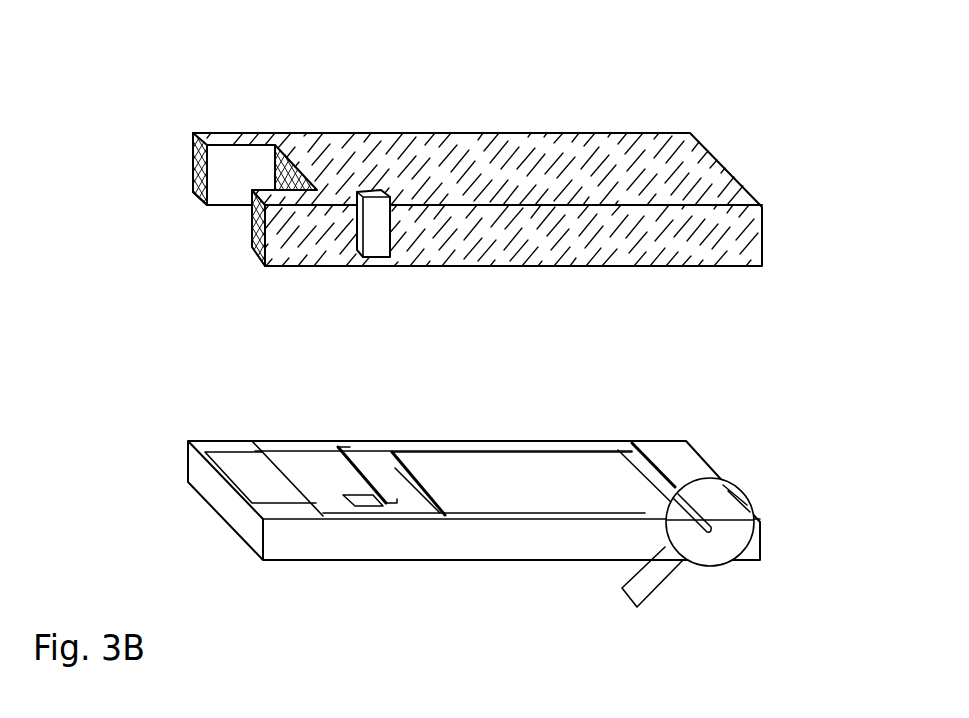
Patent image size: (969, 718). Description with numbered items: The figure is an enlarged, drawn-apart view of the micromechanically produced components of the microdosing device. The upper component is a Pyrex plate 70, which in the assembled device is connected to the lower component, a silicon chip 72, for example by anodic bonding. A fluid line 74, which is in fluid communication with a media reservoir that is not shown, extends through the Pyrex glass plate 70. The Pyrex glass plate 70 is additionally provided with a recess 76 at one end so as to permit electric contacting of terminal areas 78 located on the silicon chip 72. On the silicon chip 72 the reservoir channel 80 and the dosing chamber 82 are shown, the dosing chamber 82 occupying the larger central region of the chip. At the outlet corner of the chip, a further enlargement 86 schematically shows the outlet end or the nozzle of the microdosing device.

The Pyrex plate 70 is at (713, 170).
The silicon chip 72 is at (430, 545).
The fluid line 74 is at (370, 190).
The recess 76 is at (245, 128).
The terminal areas 78 is at (253, 477).
The reservoir channel 80 is at (362, 462).
The dosing chamber 82 is at (543, 475).
The further enlargement 86 is at (715, 568).